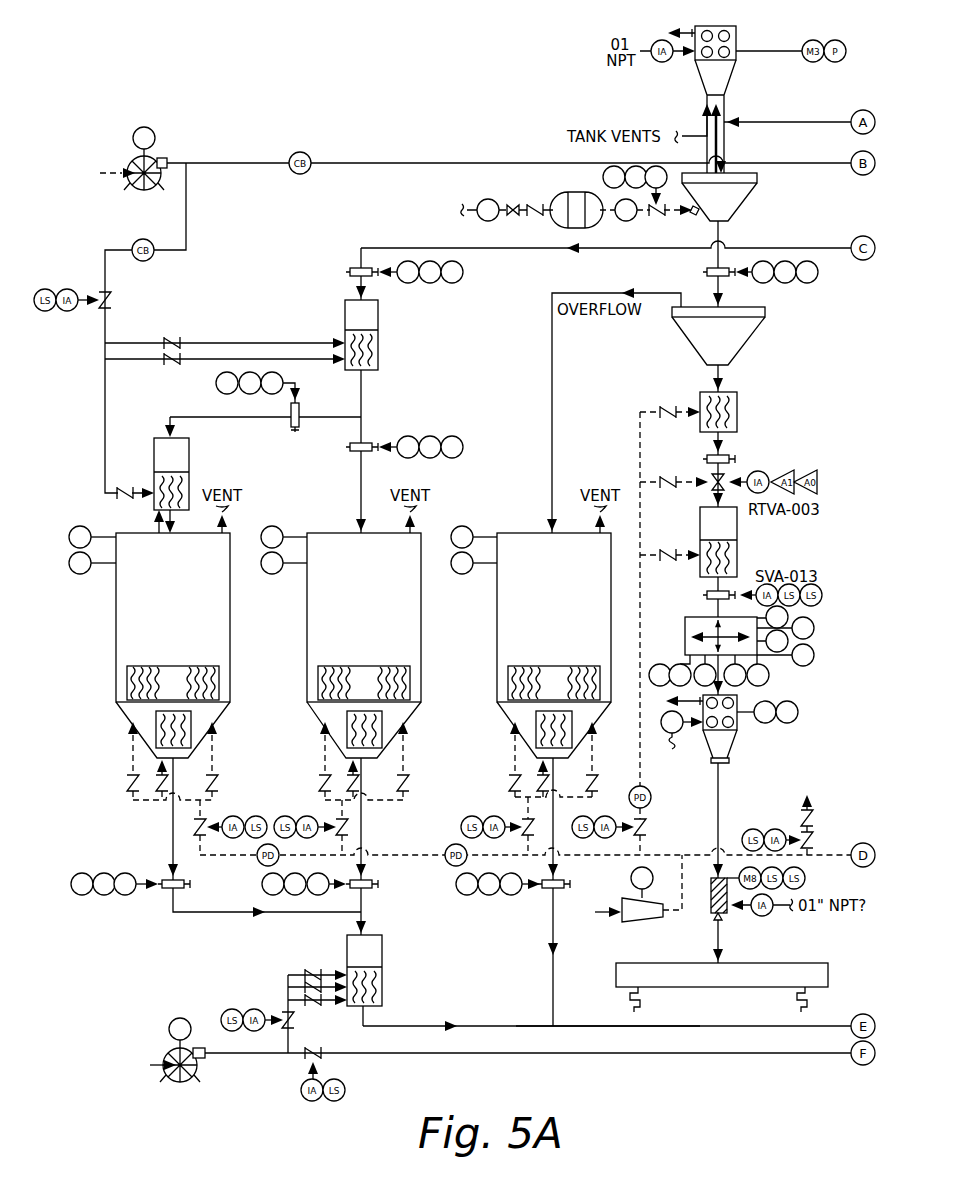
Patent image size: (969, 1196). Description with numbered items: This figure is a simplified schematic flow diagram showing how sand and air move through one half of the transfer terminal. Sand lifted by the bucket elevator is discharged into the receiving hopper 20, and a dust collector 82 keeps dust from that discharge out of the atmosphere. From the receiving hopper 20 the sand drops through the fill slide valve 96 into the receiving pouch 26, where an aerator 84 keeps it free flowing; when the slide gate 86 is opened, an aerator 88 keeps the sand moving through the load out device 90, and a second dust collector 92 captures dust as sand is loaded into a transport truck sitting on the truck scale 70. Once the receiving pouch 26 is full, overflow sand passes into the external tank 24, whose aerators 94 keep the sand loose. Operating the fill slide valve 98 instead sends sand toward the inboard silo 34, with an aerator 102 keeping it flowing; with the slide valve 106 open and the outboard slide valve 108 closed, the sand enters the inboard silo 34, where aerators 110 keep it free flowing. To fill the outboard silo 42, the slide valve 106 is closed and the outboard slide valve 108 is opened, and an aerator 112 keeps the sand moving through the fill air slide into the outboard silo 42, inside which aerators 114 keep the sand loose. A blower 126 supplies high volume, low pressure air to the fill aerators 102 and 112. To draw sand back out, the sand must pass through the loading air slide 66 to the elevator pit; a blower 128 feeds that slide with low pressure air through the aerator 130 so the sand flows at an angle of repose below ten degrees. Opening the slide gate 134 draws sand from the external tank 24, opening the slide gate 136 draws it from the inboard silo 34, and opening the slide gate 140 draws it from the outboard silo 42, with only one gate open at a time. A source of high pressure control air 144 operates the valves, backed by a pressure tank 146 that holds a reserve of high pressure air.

The receiving hopper 20 is at (708, 209).
The external tank 24 is at (543, 606).
The receiving pouch 26 is at (708, 349).
The inboard silo 34 is at (354, 606).
The outboard silo 42 is at (162, 606).
The loading air slide 66 is at (516, 1025).
The truck scale 70 is at (785, 963).
The dust collector 82 is at (697, 78).
The aerator 84 is at (738, 410).
The slide gate 86 is at (736, 460).
The aerator 88 is at (700, 528).
The load out device 90 is at (685, 634).
The dust collector 92 is at (740, 700).
The aerators 94 is at (549, 735).
The fill slide valve 96 is at (706, 273).
The fill slide valve 98 is at (355, 268).
The aerator 102 is at (378, 358).
The slide valve 106 is at (352, 448).
The outboard slide valve 108 is at (291, 428).
The aerators 110 is at (360, 735).
The aerator 112 is at (154, 460).
The aerators 114 is at (170, 735).
The blower 126 is at (164, 156).
The blower 128 is at (162, 1056).
The aerator 130 is at (382, 948).
The slide gate 134 is at (571, 881).
The slide gate 136 is at (376, 881).
The slide gate 140 is at (168, 893).
The source of high pressure control air 144 is at (617, 915).
The pressure tank 146 is at (567, 196).